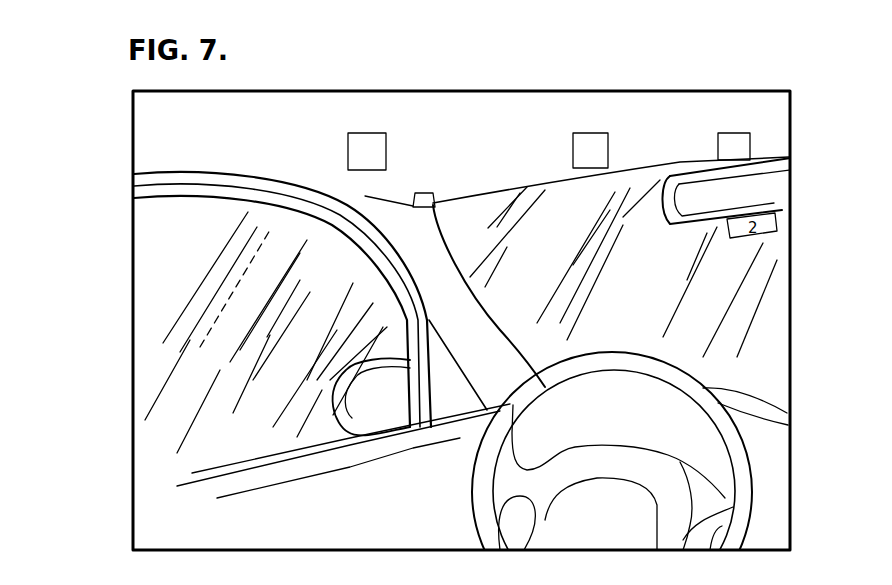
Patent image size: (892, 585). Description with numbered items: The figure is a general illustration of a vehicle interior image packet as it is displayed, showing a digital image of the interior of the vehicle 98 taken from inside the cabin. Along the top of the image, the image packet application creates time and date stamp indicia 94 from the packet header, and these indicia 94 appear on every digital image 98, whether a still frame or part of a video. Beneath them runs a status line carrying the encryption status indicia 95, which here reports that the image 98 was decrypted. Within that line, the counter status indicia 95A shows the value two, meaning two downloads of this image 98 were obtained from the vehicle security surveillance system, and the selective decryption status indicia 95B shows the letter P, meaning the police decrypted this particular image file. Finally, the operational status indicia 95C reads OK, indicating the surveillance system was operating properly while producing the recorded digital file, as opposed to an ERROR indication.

The time and date stamp indicia 94 is at (192, 126).
The encryption status indicia 95 is at (131, 150).
The counter status indicia 95A is at (365, 172).
The selective decryption status indicia 95B is at (613, 148).
The operational status indicia 95C is at (753, 148).
The digital image of the interior of the vehicle 98 is at (418, 207).